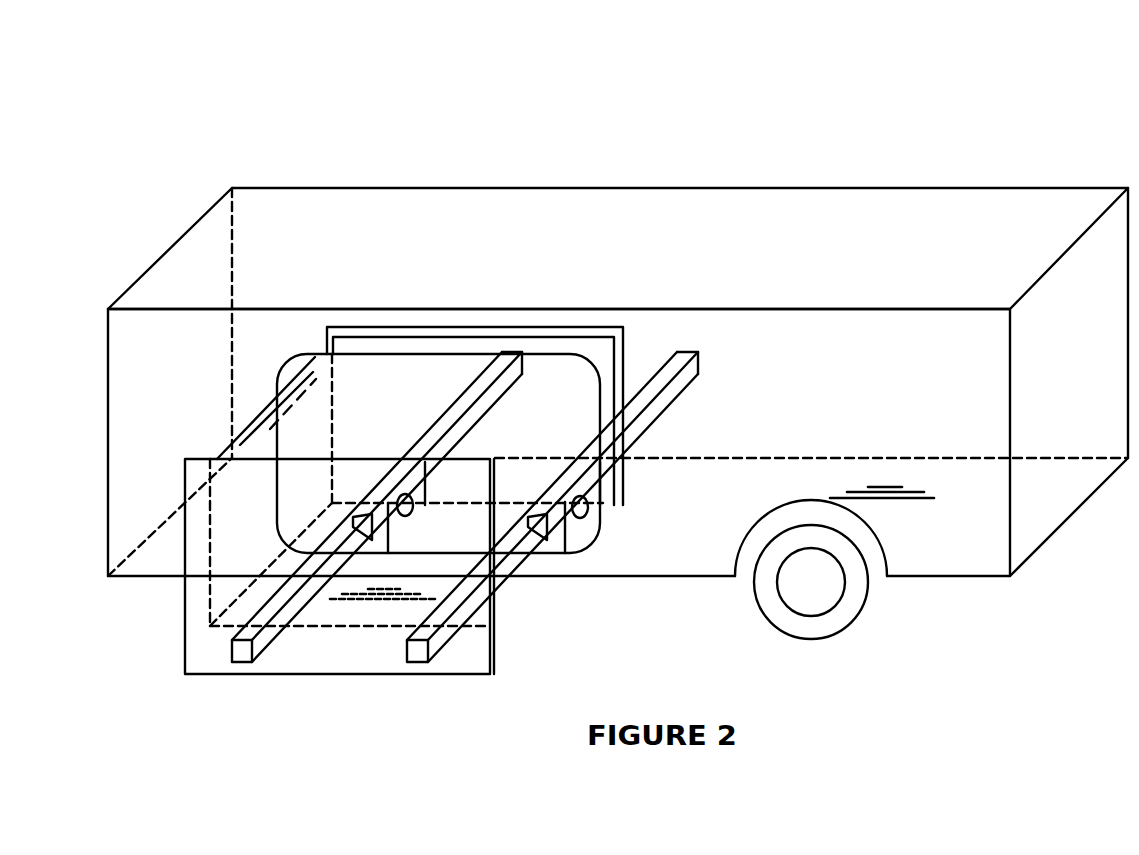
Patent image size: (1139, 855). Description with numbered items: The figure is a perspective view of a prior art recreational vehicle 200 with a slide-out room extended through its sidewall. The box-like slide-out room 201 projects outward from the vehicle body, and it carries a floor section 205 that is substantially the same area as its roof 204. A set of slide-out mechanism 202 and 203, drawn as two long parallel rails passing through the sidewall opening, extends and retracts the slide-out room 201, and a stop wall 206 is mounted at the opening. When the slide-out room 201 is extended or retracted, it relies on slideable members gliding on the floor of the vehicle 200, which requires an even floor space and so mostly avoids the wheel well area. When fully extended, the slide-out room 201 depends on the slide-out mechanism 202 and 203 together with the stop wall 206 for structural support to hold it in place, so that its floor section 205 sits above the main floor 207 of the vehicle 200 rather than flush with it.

The vehicle 200 is at (853, 170).
The slide-out room 201 is at (248, 560).
The slide-out mechanism 202 is at (684, 383).
The slide-out mechanism 203 is at (458, 412).
The roof 204 is at (265, 423).
The floor section 205 is at (412, 598).
The stop wall 206 is at (592, 330).
The main floor 207 is at (880, 482).